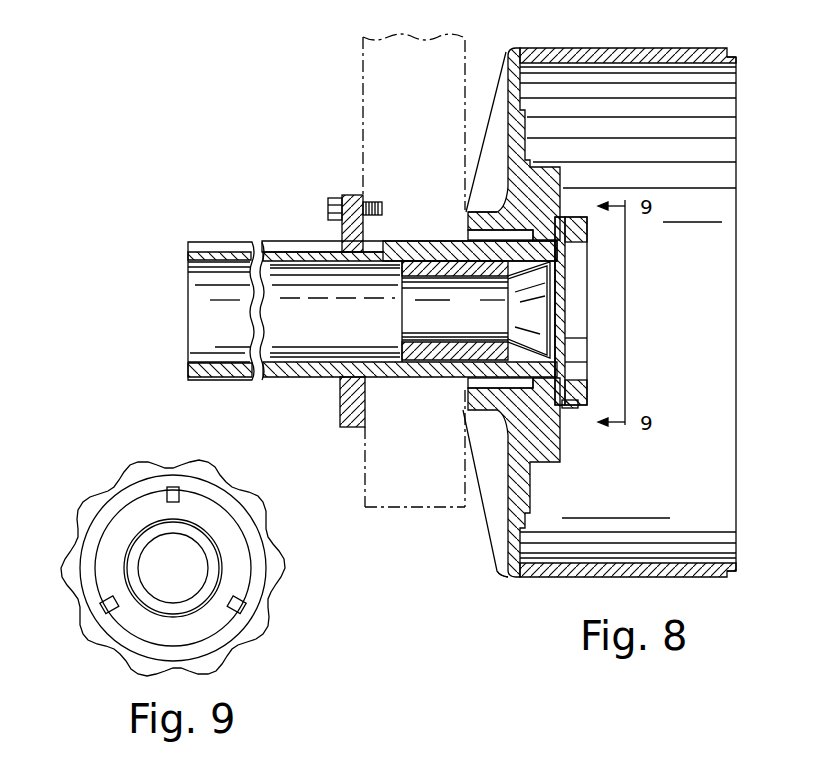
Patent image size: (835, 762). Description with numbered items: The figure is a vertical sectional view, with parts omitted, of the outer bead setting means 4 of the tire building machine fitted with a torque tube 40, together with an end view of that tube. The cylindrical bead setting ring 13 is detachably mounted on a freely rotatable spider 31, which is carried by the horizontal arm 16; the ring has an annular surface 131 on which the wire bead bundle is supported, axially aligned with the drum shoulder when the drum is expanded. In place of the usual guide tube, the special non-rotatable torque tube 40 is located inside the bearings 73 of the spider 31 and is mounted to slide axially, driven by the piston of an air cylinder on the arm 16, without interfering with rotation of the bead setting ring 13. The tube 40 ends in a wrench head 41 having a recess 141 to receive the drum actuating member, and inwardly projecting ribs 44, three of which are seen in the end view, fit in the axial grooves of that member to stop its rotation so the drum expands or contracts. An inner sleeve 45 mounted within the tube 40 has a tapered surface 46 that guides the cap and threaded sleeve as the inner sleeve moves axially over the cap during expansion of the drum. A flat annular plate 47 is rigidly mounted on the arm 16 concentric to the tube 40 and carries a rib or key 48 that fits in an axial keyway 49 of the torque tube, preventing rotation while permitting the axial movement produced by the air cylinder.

In FIG. 8, the outer bead setting means 4 is at (513, 578).
In FIG. 8, the bead setting ring 13 is at (632, 48).
In FIG. 8, the annular surface 131 is at (732, 569).
In FIG. 8, the horizontal arm 16 is at (362, 104).
In FIG. 8, the spider 31 is at (482, 140).
In FIG. 8, the torque tube 40 is at (303, 362).
In FIG. 8, the wrench head 41 is at (575, 412).
In FIG. 9, the wrench head 41 is at (265, 538).
In FIG. 8, the inwardly projecting ribs 44 is at (577, 240).
In FIG. 9, the inwardly projecting ribs 44 is at (185, 503).
In FIG. 8, the inner sleeve 45 is at (477, 343).
In FIG. 9, the inner sleeve 45 is at (145, 550).
In FIG. 8, the tapered surface 46 is at (535, 343).
In FIG. 8, the flat annular plate 47 is at (340, 418).
In FIG. 8, the rib or key 48 is at (350, 262).
In FIG. 8, the axial keyway 49 is at (212, 250).
In FIG. 8, the bearings 73 is at (462, 230).
In FIG. 8, the recess 141 is at (580, 392).
In FIG. 9, the recess 141 is at (113, 537).